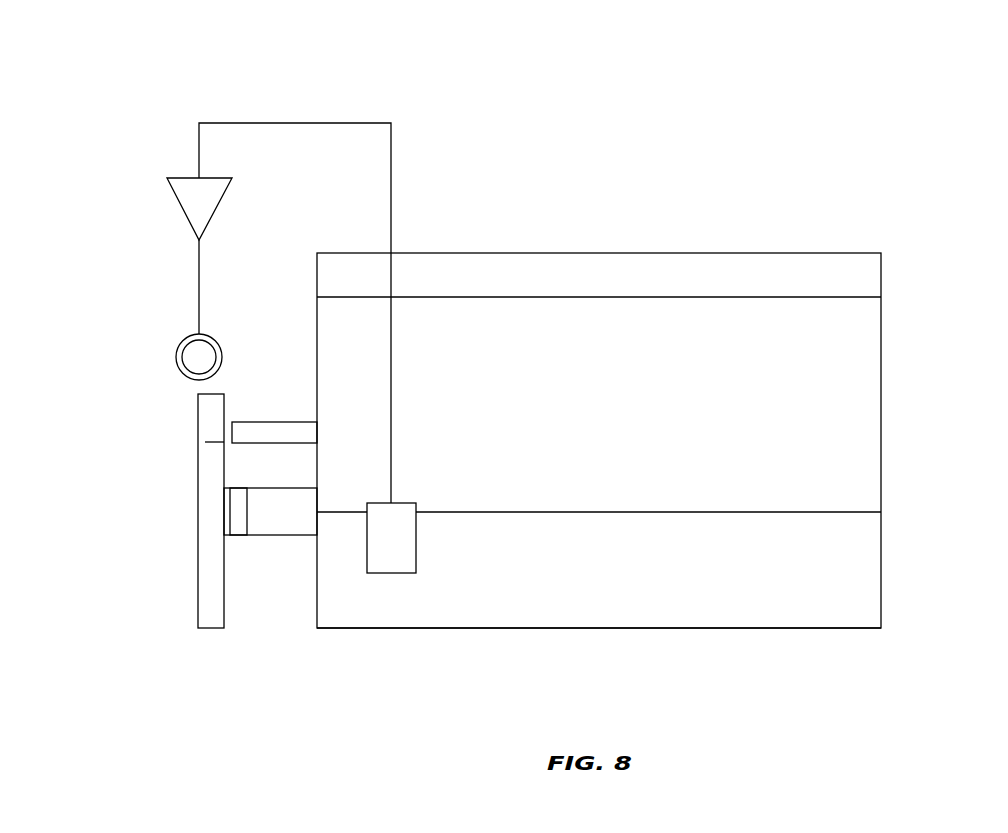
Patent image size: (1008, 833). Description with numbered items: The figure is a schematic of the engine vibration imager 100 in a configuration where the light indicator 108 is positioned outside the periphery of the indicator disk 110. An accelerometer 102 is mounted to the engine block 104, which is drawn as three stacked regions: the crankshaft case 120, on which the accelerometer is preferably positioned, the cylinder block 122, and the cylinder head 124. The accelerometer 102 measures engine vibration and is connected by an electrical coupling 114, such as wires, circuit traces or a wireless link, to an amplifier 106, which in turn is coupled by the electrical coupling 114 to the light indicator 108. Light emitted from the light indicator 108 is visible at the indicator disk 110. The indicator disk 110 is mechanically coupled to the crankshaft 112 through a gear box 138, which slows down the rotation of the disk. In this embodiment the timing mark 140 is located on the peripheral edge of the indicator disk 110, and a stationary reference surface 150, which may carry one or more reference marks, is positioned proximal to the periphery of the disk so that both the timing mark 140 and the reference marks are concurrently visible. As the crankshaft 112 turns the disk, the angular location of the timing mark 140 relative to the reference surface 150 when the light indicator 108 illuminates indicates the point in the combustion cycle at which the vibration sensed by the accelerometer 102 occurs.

The engine vibration imager 100 is at (177, 78).
The accelerometer 102 is at (408, 547).
The engine block 104 is at (772, 242).
The amplifier 106 is at (193, 197).
The light indicator 108 is at (172, 350).
The indicator disk 110 is at (205, 553).
The crankshaft 112 is at (288, 535).
The electrical coupling 114 is at (195, 282).
The crankshaft case 120 is at (599, 598).
The cylinder block 122 is at (599, 478).
The cylinder head 124 is at (599, 280).
The gear box 138 is at (242, 527).
The timing mark 140 is at (212, 442).
The reference surface 150 is at (288, 425).